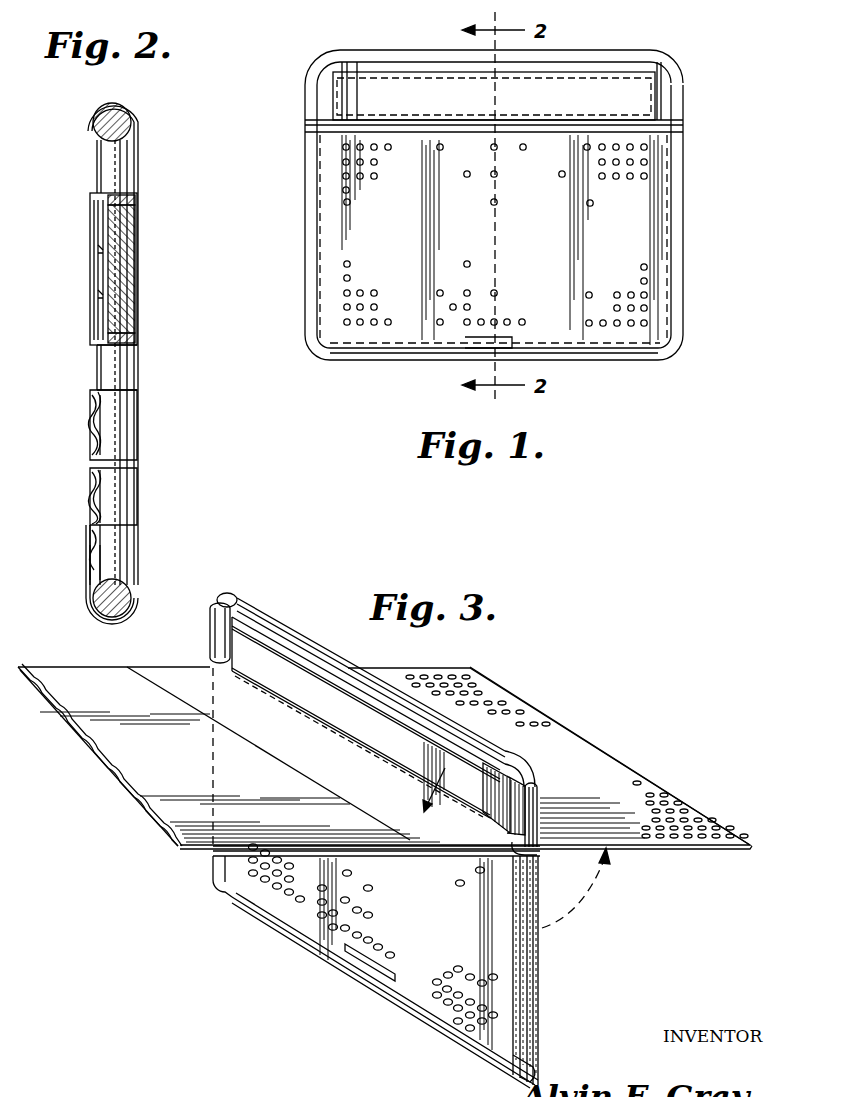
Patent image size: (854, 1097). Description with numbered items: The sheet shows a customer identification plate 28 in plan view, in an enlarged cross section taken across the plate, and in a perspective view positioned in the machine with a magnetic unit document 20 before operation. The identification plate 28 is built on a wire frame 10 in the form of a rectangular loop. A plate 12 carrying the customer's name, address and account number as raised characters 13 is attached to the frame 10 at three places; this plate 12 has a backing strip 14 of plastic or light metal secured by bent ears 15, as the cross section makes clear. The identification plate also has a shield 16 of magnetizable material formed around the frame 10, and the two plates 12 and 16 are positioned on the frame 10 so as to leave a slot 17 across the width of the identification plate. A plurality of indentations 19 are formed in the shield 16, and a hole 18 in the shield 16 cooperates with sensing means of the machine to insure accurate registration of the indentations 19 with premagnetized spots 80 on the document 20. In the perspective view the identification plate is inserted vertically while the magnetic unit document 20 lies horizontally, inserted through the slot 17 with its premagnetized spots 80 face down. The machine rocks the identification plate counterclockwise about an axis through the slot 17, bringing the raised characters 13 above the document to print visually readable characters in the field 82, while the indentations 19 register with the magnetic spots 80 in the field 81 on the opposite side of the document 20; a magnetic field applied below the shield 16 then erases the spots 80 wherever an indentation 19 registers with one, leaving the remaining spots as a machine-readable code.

In FIG. 1, the wire frame 10 is at (668, 58).
In FIG. 2, the wire frame 10 is at (100, 112).
In FIG. 3, the wire frame 10 is at (224, 594).
In FIG. 1, the plate 12 is at (592, 90).
In FIG. 2, the plate 12 is at (103, 231).
In FIG. 3, the plate 12 is at (272, 645).
In FIG. 1, the raised characters 13 is at (385, 78).
In FIG. 2, the raised characters 13 is at (97, 296).
In FIG. 3, the raised characters 13 is at (300, 664).
In FIG. 2, the backing strip 14 is at (130, 262).
In FIG. 2, the bent ears 15 is at (128, 206).
In FIG. 1, the shield 16 is at (330, 234).
In FIG. 2, the shield 16 is at (92, 445).
In FIG. 3, the shield 16 is at (300, 921).
In FIG. 1, the slot 17 is at (650, 128).
In FIG. 2, the slot 17 is at (106, 376).
In FIG. 3, the slot 17 is at (514, 853).
In FIG. 1, the hole 18 is at (474, 347).
In FIG. 2, the hole 18 is at (92, 565).
In FIG. 3, the hole 18 is at (372, 960).
In FIG. 1, the indentations 19 is at (343, 168).
In FIG. 2, the indentations 19 is at (90, 502).
In FIG. 3, the indentations 19 is at (493, 974).
In FIG. 3, the magnetic unit document 20 is at (115, 752).
In FIG. 1, the customer identification plate 28 is at (690, 182).
In FIG. 2, the customer identification plate 28 is at (145, 142).
In FIG. 3, the customer identification plate 28 is at (552, 958).
In FIG. 3, the premagnetized spots 80 is at (690, 847).
In FIG. 3, the field 81 is at (597, 766).
In FIG. 3, the field 82 is at (167, 682).